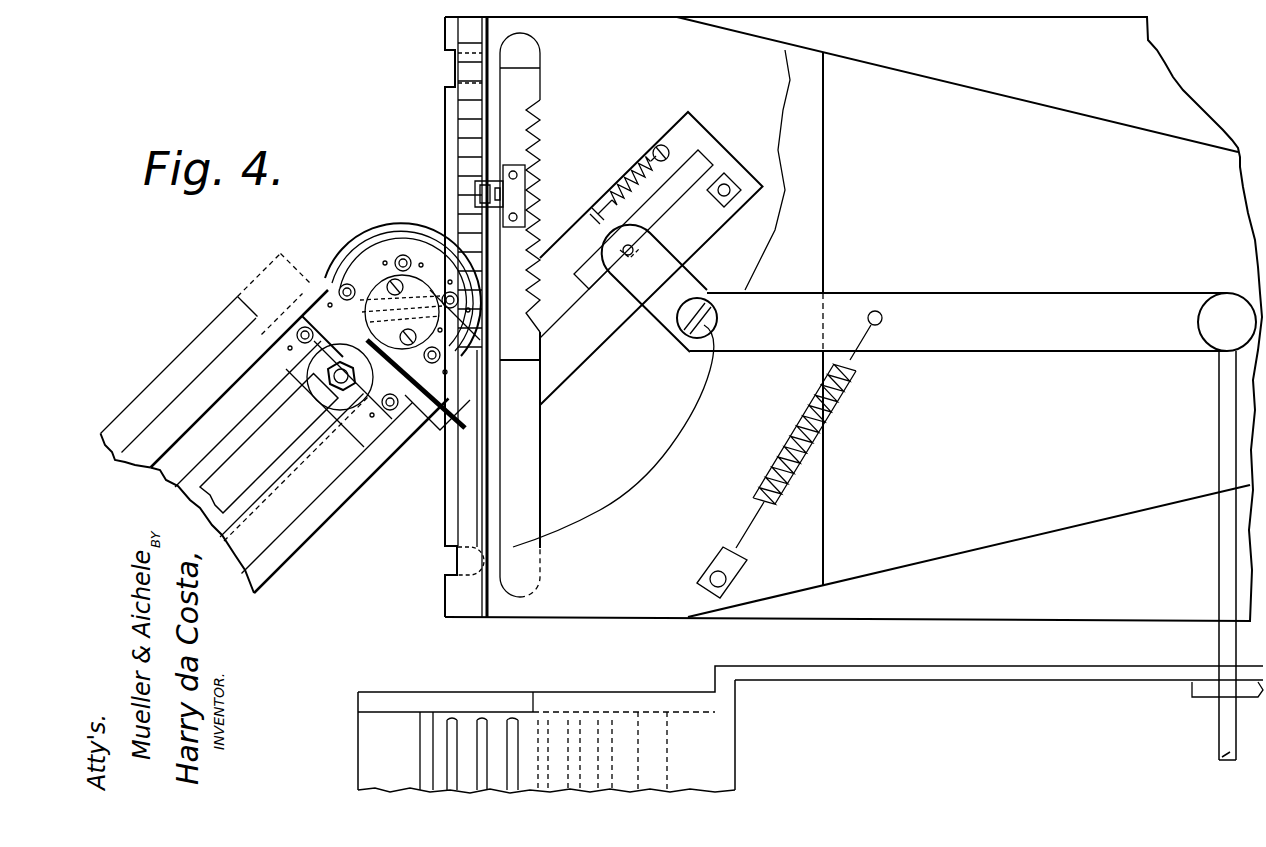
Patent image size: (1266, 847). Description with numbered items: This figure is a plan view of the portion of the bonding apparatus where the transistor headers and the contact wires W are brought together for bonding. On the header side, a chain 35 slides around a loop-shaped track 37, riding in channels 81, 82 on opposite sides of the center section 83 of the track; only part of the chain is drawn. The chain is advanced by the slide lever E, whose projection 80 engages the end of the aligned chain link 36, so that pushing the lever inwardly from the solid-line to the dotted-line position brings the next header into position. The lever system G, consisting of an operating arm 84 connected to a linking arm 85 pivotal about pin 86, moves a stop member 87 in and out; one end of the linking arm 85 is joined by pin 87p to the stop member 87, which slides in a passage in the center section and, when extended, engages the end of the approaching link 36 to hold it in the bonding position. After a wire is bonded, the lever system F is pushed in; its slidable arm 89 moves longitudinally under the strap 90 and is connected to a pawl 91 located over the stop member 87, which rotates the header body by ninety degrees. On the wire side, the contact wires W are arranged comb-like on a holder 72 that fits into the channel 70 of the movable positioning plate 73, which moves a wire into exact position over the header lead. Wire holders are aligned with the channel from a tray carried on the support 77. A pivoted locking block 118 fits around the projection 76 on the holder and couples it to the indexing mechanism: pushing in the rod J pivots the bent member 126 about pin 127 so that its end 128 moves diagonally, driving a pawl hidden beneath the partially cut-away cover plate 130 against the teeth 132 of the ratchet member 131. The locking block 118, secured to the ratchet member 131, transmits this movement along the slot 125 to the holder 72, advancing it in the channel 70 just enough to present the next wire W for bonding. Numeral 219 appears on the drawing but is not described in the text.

The positioning plate 73 is at (1080, 127).
The channel 70 is at (483, 615).
The contact wires W is at (448, 141).
The ratchet member 131 is at (527, 90).
The teeth 132 is at (531, 157).
The slot 125 is at (523, 452).
The locking block 118 is at (528, 192).
The projection 76 is at (480, 190).
The holder 72 is at (477, 197).
The slide plate 219 is at (703, 160).
The end of bent member 128 is at (657, 307).
The pin 127 is at (710, 327).
The bent member 126 is at (1040, 293).
The rod J is at (1215, 732).
The cover plate 130 is at (650, 482).
The channel 81 is at (193, 421).
The slide lever E is at (190, 355).
The channel 82 is at (280, 519).
The slidable arm 89 is at (278, 462).
The lever system F is at (223, 467).
The center section 83 is at (257, 587).
The loop-shaped track 37 is at (326, 540).
The chain 35 is at (290, 368).
The projection 80 is at (307, 290).
The chain link 36 is at (450, 240).
The pawl 91 is at (401, 312).
The pin 87p is at (383, 313).
The strap 90 is at (328, 413).
The lever system G is at (470, 417).
The stop member 87 is at (480, 367).
The operating arm 84 is at (430, 410).
The linking arm 85 is at (367, 420).
The pin 86 is at (353, 430).
The support 77 is at (358, 720).